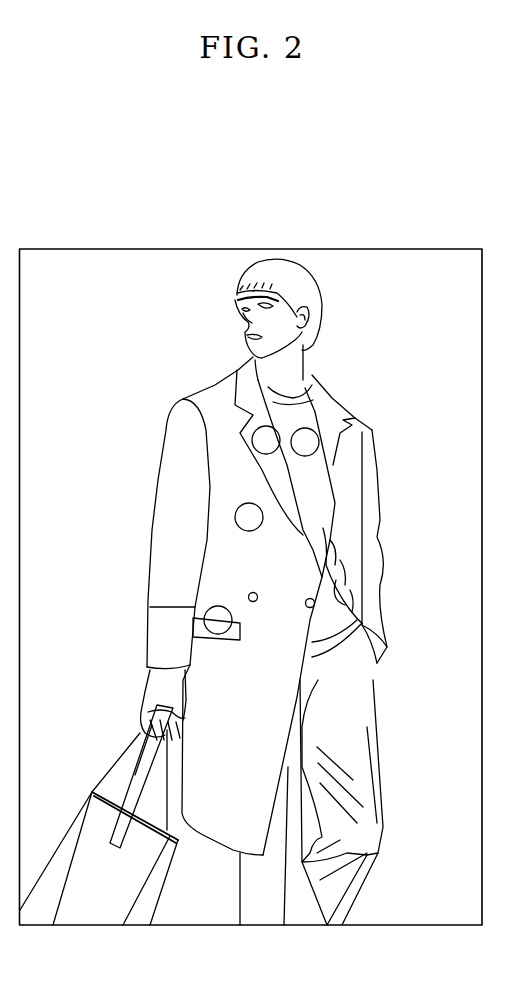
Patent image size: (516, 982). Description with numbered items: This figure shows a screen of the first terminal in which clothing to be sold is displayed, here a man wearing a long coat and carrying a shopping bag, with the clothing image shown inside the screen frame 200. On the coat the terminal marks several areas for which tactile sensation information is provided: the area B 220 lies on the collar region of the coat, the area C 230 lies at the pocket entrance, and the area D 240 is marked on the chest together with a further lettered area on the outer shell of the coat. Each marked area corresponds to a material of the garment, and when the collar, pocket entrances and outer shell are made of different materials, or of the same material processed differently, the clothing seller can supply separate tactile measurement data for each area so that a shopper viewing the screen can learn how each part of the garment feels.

The image of user wearing garment 200 is at (370, 248).
The area B 220 is at (252, 436).
The area C 230 is at (204, 617).
The area D 240 is at (235, 516).